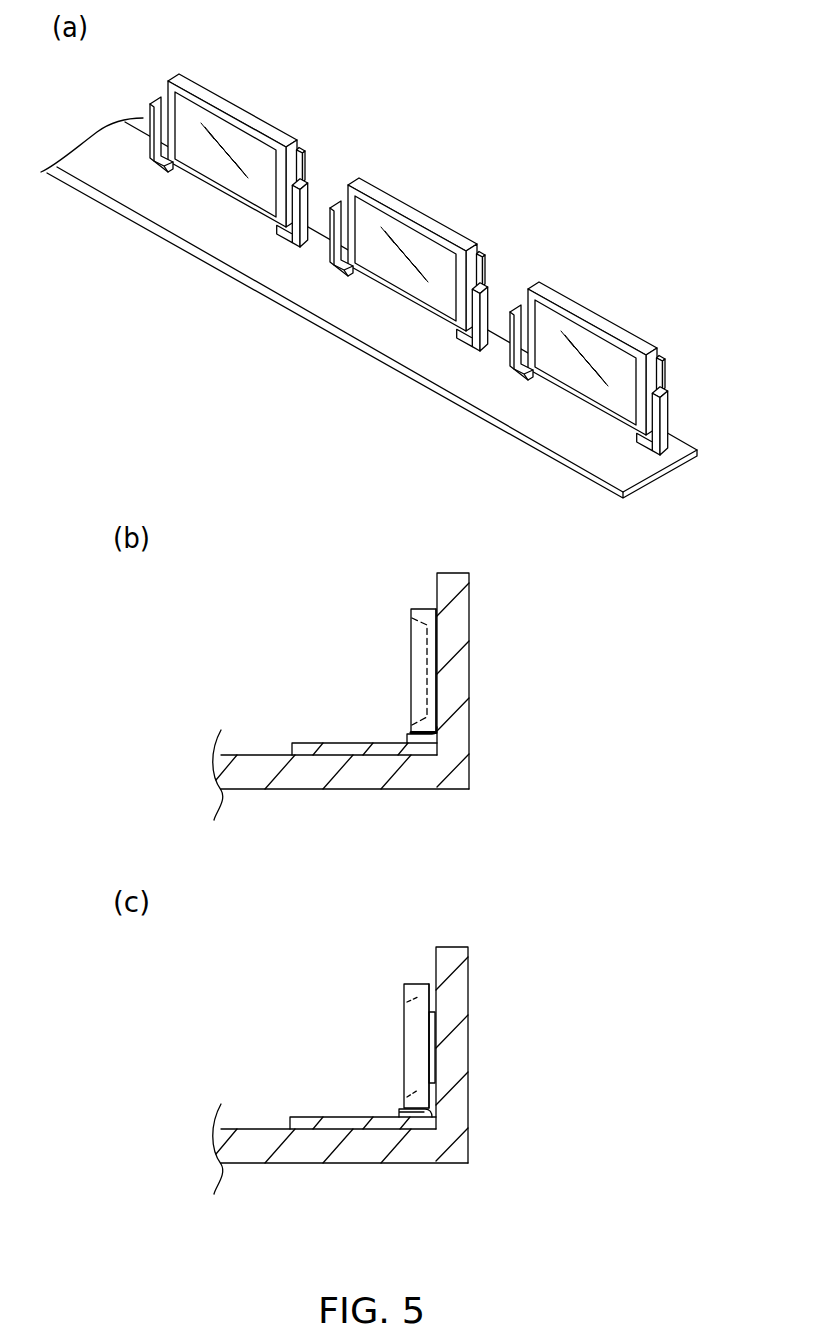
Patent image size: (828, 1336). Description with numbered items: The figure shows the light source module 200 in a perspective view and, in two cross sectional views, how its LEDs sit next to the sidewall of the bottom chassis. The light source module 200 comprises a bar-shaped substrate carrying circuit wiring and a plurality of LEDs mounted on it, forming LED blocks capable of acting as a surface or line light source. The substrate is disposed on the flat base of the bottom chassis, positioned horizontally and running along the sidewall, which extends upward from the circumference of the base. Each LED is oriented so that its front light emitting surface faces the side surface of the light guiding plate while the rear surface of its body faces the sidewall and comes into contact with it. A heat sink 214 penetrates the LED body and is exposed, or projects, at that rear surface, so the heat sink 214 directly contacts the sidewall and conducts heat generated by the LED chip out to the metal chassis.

The light source module 200 is at (405, 142).
The heat sink 214 is at (435, 1055).